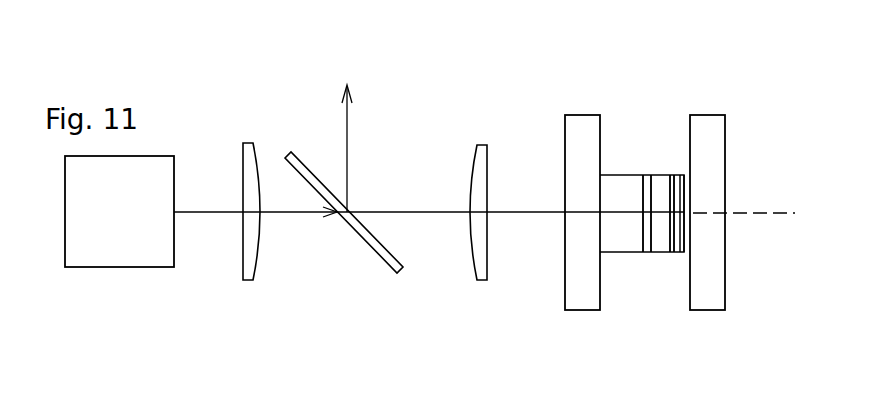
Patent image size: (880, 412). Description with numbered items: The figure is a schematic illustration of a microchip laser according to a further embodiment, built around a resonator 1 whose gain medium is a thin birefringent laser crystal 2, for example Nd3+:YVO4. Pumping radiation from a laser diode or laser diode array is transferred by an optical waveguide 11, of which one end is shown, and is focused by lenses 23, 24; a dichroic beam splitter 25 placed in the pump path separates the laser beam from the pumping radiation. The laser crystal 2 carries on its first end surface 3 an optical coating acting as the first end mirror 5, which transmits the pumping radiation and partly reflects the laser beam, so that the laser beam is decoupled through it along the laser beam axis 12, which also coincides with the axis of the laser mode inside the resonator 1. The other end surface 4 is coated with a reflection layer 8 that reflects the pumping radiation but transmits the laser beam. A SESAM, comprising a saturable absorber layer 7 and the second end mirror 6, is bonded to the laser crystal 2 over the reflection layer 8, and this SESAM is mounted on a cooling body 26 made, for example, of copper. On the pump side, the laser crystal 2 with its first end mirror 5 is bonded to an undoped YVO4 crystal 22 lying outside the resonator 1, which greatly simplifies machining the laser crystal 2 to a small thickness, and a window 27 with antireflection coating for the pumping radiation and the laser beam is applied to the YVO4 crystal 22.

The resonator 1 is at (686, 185).
The laser crystal 2 is at (658, 247).
The first end surface 3 is at (635, 192).
The other end surface 4 is at (673, 237).
The first end mirror 5 is at (647, 238).
The second end mirror 6 is at (684, 225).
The saturable absorber layer 7 is at (681, 202).
The reflection layer 8 is at (675, 187).
The optical waveguide 11 is at (127, 247).
The laser beam axis 12 is at (769, 213).
The undoped YVO4 crystal 22 is at (617, 188).
The lens 23 is at (250, 257).
The lens 24 is at (479, 260).
The dichroic beam splitter 25 is at (382, 255).
The cooling body 26 is at (710, 293).
The window 27 is at (578, 257).